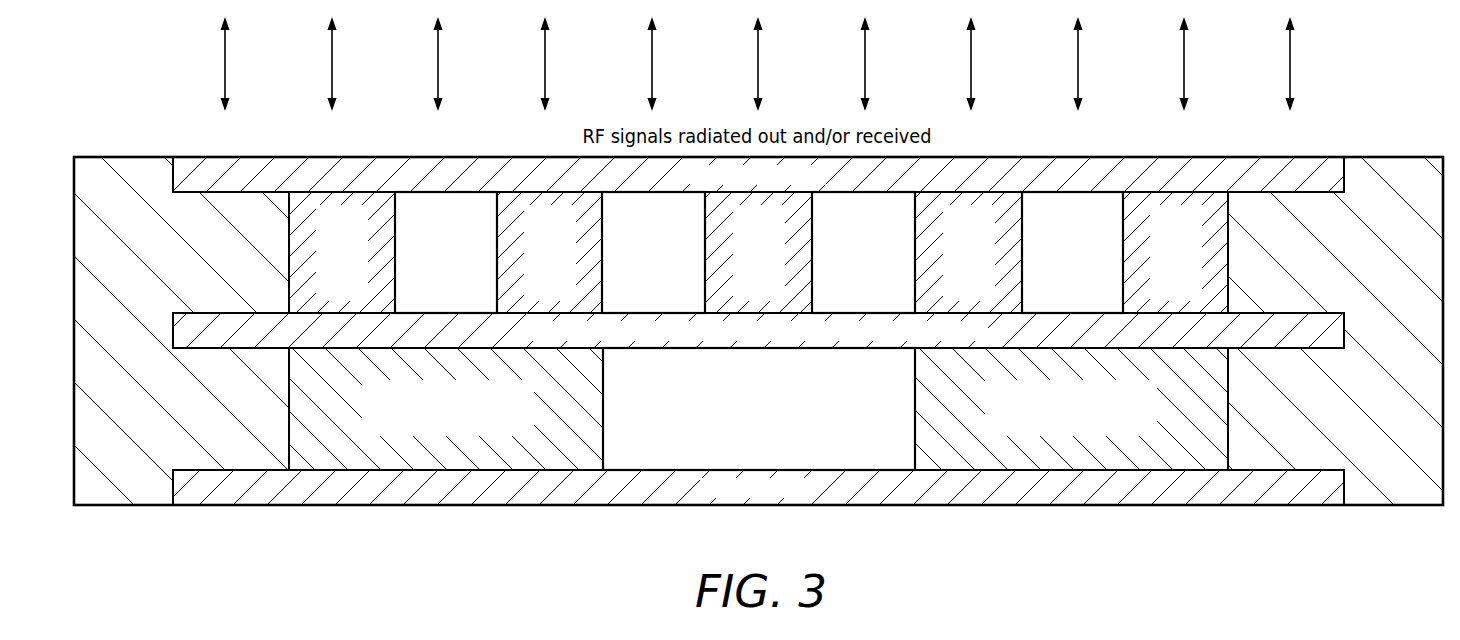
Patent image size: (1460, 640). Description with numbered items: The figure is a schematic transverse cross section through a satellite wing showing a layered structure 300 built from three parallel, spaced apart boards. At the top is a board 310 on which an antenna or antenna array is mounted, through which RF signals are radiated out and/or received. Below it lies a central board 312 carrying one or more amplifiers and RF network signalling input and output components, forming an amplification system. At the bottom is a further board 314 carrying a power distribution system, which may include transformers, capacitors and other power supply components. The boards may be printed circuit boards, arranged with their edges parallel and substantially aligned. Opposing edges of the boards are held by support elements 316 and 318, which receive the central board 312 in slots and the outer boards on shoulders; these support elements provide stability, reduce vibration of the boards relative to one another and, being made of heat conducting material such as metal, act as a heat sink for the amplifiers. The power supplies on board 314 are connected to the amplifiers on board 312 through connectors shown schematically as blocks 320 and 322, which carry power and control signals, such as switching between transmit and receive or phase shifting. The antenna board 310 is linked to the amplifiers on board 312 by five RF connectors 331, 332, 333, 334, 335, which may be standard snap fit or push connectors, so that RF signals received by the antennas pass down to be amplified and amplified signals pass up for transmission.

The structure 300 is at (125, 82).
The board 310 is at (1295, 184).
The board 312 is at (1296, 346).
The further board 314 is at (1294, 496).
The support element 316 is at (1391, 496).
The support element 318 is at (122, 496).
The connector 320 is at (571, 456).
The connector 322 is at (1197, 456).
The RF connector 331 is at (289, 254).
The RF connector 332 is at (497, 254).
The RF connector 333 is at (705, 254).
The RF connector 334 is at (915, 254).
The RF connector 335 is at (1123, 254).